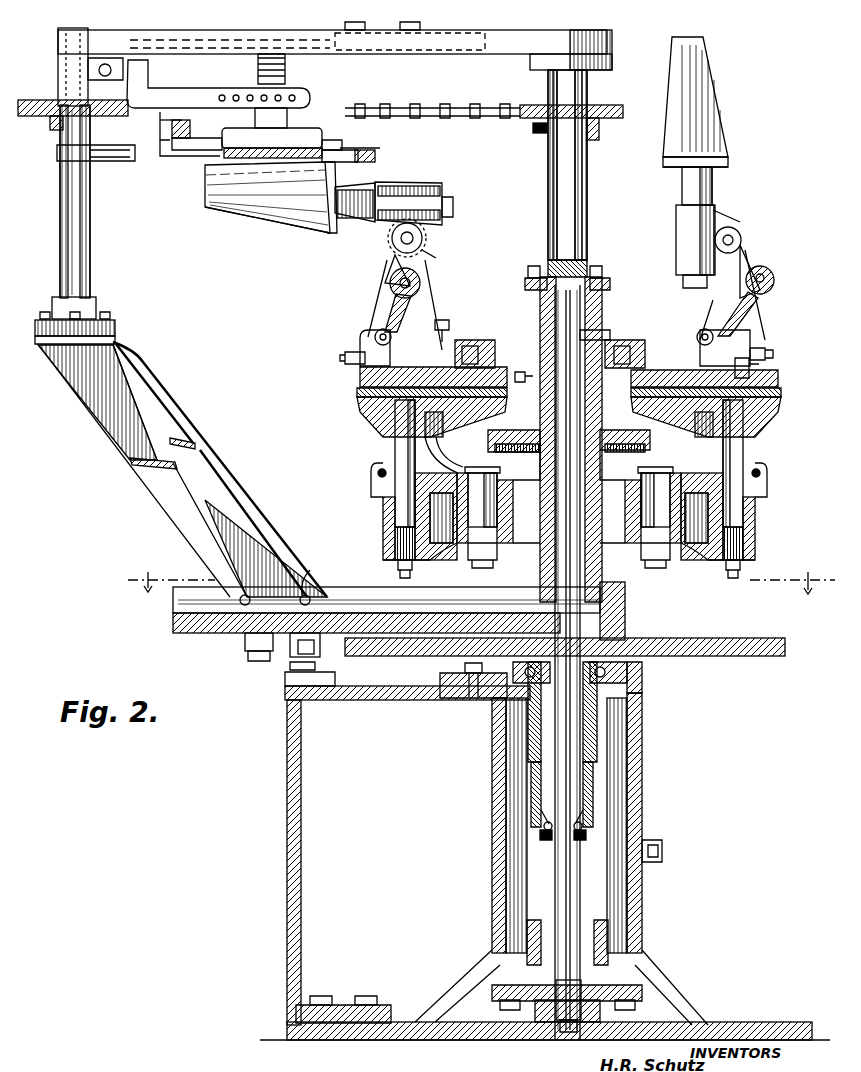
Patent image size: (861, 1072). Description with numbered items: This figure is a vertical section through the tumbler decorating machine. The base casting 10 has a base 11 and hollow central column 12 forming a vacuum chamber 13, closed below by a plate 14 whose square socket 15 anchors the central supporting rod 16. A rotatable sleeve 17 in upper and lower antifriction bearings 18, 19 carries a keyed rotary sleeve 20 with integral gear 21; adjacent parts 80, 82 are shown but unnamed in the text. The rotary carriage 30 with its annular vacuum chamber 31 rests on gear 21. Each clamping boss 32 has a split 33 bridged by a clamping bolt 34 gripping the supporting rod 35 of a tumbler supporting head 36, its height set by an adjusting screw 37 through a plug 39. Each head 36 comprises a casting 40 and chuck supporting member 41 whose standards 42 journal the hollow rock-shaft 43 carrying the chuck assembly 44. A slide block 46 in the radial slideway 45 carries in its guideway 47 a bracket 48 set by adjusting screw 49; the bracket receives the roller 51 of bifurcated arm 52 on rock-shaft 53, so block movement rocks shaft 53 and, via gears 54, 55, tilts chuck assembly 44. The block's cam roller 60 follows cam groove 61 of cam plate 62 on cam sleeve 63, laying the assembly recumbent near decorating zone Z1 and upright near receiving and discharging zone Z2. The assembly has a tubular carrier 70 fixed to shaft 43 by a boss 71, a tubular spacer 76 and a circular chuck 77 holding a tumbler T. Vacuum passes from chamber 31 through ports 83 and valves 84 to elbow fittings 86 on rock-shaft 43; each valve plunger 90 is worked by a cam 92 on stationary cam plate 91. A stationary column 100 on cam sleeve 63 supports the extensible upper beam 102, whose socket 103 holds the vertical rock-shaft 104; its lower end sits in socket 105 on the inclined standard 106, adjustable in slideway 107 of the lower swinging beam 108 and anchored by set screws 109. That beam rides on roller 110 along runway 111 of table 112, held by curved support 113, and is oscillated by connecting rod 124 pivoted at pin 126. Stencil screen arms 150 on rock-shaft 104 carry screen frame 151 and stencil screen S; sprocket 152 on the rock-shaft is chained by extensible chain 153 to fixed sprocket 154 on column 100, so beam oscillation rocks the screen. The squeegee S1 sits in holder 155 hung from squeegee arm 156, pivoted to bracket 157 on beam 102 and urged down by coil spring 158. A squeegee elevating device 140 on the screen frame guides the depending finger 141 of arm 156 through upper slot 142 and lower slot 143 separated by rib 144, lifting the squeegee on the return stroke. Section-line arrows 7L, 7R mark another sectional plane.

The base casting 10 is at (668, 985).
The base 11 is at (740, 1024).
The hollow central vertical column 12 is at (642, 778).
The vacuum chamber 13 is at (616, 838).
The plate 14 is at (530, 998).
The square socket 15 is at (548, 1022).
The central supporting rod 16 is at (578, 854).
The rotatable sleeve 17 is at (592, 862).
The upper antifriction bearing 18 is at (635, 672).
The lower antifriction bearing 19 is at (622, 960).
The rotary sleeve 20 is at (626, 610).
The gear 21 is at (672, 640).
The rotary carriage 30 is at (670, 552).
The annular vacuum chamber 31 is at (520, 555).
The clamping boss 32 is at (384, 512).
The split 33 is at (380, 488).
The clamping bolt 34 is at (376, 474).
The supporting rod 35 is at (398, 450).
The tumbler supporting head 36 is at (385, 432).
The adjusting screw 37 is at (398, 566).
The plug 39 is at (392, 546).
The casting 40 is at (357, 408).
The chuck supporting member 41 is at (357, 392).
The vertical standards 42 is at (378, 294).
The horizontal hollow rock-shaft 43 is at (428, 244).
The chuck assembly 44 is at (358, 215).
The radial slideway 45 is at (512, 388).
The slide block 46 is at (358, 376).
The guideway 47 is at (445, 340).
The bracket 48 is at (366, 344).
The adjusting screw 49 is at (345, 358).
The roller 51 is at (374, 332).
The swingable bifurcated arm 52 is at (410, 302).
The horizontal rock-shaft 53 is at (422, 283).
The gear 54 is at (420, 272).
The gear 55 is at (430, 252).
The cam roller 60 is at (474, 344).
The cam groove 61 is at (478, 338).
The cam plate 62 is at (606, 330).
The cam sleeve 63 is at (588, 410).
The tubular carrier 70 is at (430, 182).
The boss 71 is at (395, 248).
The tubular spacer 76 is at (352, 194).
The circular chuck 77 is at (330, 235).
The bearing 80 is at (585, 824).
The sleeve 82 is at (575, 776).
The ports 83 is at (488, 562).
The valves 84 is at (504, 472).
The elbow fittings 86 is at (447, 462).
The plunger 90 is at (486, 474).
The stationary cam plate 91 is at (512, 432).
The cam 92 is at (650, 442).
The stationary column 100 is at (588, 240).
The extensible horizontal upper beam 102 is at (478, 50).
The socket 103 is at (66, 50).
The vertical rock-shaft 104 is at (86, 236).
The socket 105 is at (100, 304).
The inclined standard 106 is at (155, 398).
The slideway 107 is at (190, 602).
The lower horizontally swingable beam 108 is at (215, 626).
The set screws 109 is at (318, 570).
The roller 110 is at (300, 670).
The runway 111 is at (304, 680).
The table 112 is at (350, 698).
The curved support 113 is at (288, 758).
The connecting rod 124 is at (250, 648).
The pin 126 is at (300, 656).
The squeegee elevating device 140 is at (192, 128).
The depending finger 141 is at (158, 124).
The upper slot 142 is at (168, 148).
The lower slot 143 is at (182, 160).
The rib 144 is at (190, 147).
The stencil screen arms 150 is at (112, 160).
The screen frame 151 is at (362, 162).
The sprocket 152 is at (40, 116).
The extensible chain 153 is at (442, 106).
The sprocket 154 is at (610, 98).
The holder 155 is at (312, 132).
The squeegee arm 156 is at (195, 96).
The bracket 157 is at (103, 62).
The coil spring 158 is at (288, 68).
The tumbler T is at (285, 230).
The stencil screen S is at (378, 156).
The squeegee S1 is at (340, 146).
The decorating zone Z1 is at (376, 135).
The tumbler receiving and discharging zone Z2 is at (739, 198).
The section line 7 7L is at (171, 576).
The section line 7 7R is at (792, 578).